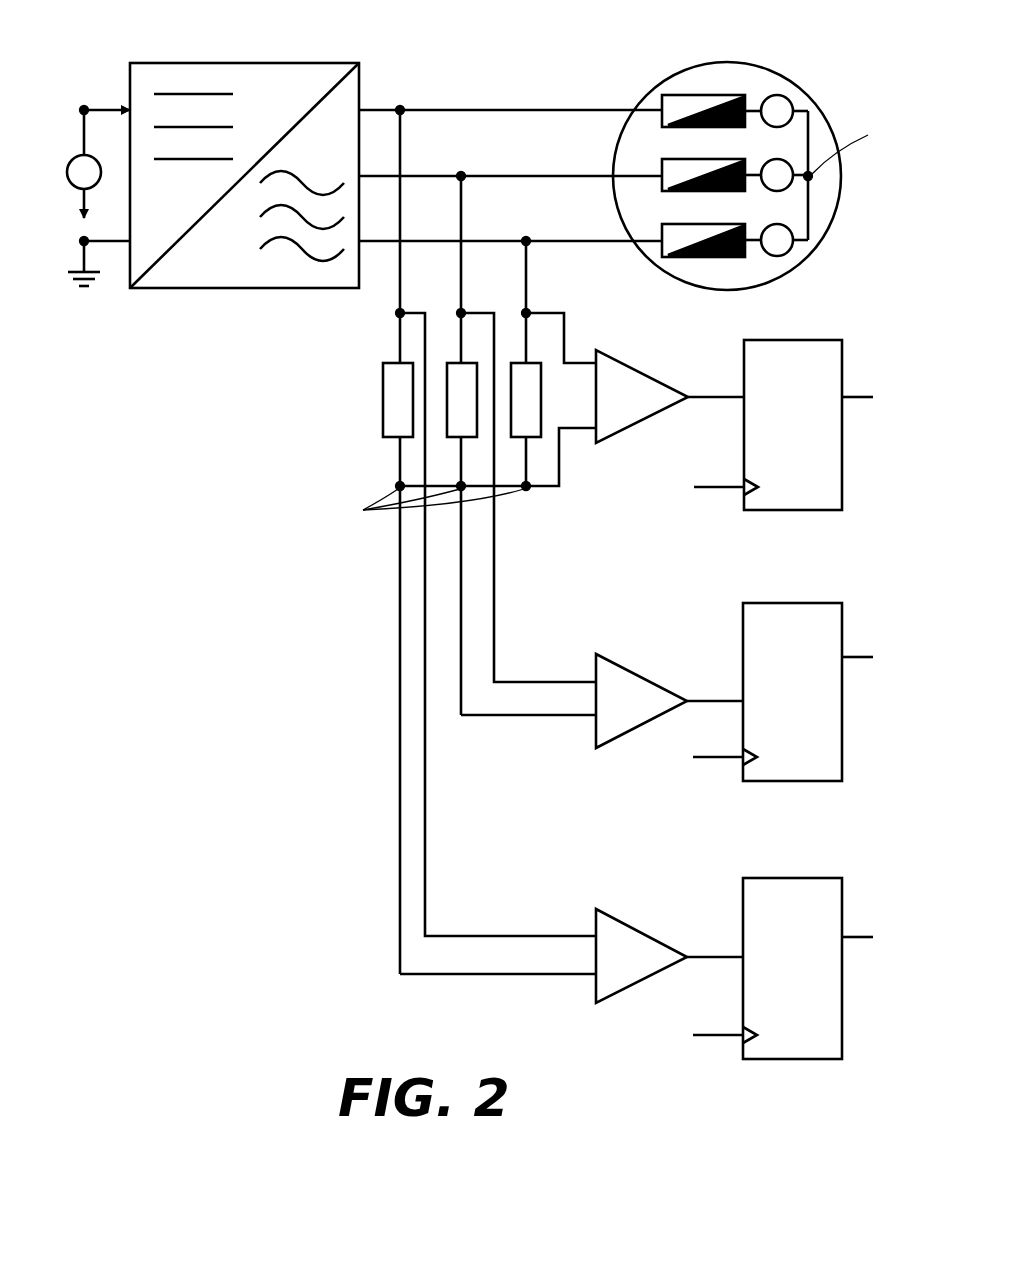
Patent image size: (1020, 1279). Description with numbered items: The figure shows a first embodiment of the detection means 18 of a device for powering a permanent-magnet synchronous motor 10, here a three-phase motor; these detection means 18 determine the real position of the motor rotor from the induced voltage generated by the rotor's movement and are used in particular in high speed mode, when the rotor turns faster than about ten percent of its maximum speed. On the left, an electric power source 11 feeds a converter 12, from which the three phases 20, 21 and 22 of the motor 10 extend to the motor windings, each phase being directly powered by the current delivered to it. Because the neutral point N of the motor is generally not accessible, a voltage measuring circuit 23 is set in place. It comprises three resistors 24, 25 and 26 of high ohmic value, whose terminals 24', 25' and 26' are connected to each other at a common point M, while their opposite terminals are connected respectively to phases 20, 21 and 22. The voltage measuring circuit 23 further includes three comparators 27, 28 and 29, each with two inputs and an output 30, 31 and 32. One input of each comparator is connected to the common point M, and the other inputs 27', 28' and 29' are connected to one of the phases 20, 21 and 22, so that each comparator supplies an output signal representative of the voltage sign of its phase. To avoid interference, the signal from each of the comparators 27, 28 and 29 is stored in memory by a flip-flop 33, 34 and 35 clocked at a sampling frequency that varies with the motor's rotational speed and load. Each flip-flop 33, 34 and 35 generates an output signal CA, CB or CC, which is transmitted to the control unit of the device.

The synchronous motor with a permanent magnet 10 is at (794, 80).
The electric power source 11 is at (72, 194).
The converter 12 is at (203, 257).
The detection means 18 is at (342, 438).
The phase 20 is at (464, 110).
The phase 21 is at (530, 176).
The phase 22 is at (564, 241).
The voltage measuring circuit 23 is at (389, 526).
The resistor 24 is at (357, 394).
The resistor 25 is at (395, 400).
The resistor 26 is at (437, 400).
The terminal of resistor 24 24' is at (359, 462).
The terminal of resistor 25 25' is at (447, 462).
The terminal of resistor 26 26' is at (511, 462).
The comparator 27 is at (590, 955).
The comparator 28 is at (609, 697).
The comparator 29 is at (630, 395).
The input of comparator 27 27' is at (521, 896).
The input of comparator 28 28' is at (567, 643).
The input of comparator 29 29' is at (608, 323).
The output of comparator 27 30 is at (710, 957).
The output of comparator 28 31 is at (710, 702).
The output of comparator 29 32 is at (702, 397).
The flip-flop 33 is at (800, 893).
The flip-flop 34 is at (802, 633).
The flip-flop 35 is at (791, 368).